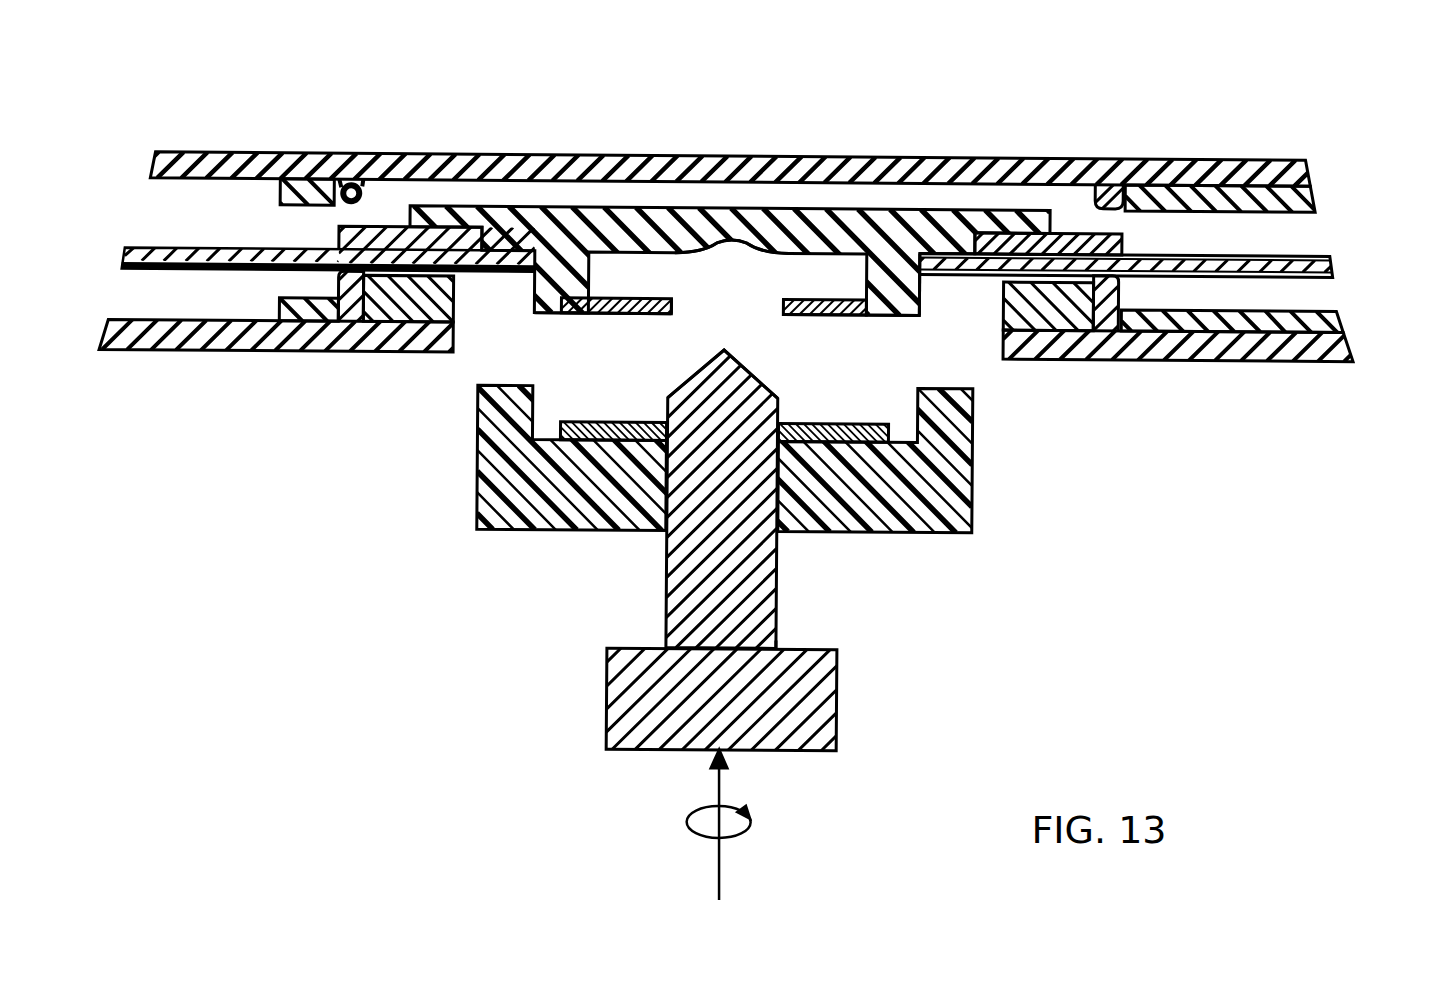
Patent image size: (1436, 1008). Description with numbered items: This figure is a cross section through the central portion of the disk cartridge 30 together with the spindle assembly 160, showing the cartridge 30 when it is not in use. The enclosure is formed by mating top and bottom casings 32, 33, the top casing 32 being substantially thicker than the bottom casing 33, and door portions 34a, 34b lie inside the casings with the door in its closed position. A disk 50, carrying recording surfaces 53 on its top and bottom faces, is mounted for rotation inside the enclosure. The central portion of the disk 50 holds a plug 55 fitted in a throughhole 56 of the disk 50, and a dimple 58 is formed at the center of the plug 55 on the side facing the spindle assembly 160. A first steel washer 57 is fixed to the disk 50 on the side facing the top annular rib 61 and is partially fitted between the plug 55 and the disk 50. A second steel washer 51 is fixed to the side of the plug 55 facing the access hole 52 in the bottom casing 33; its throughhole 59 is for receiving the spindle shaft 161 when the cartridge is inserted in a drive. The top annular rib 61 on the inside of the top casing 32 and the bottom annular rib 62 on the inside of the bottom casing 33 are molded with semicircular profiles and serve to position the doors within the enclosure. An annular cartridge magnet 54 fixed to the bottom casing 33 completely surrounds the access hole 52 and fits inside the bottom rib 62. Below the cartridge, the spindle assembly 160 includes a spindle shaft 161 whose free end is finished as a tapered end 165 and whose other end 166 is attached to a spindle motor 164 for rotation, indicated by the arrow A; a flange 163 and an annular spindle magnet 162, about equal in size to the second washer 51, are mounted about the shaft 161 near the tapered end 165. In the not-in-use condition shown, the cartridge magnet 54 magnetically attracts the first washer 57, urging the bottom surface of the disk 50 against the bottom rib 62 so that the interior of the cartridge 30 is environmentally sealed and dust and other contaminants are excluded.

The disk cartridge 30 is at (689, 130).
The top casing 32 is at (352, 170).
The bottom casing 33 is at (173, 356).
The upper liner 34a is at (306, 181).
The lower liner 34b is at (297, 352).
The disk 50 is at (120, 262).
The second steel washer 51 is at (594, 313).
The access hole 52 is at (457, 352).
The recording surfaces 53 is at (203, 251).
The annular cartridge magnet 54 is at (453, 310).
The plug 55 is at (532, 284).
The throughhole of the disk 56 is at (914, 283).
The first steel washer 57 is at (371, 229).
The dimple 58 is at (727, 245).
The throughhole of the second washer 59 is at (672, 303).
The top annular rib 61 is at (346, 204).
The bottom annular rib 62 is at (348, 350).
The spindle assembly 160 is at (573, 562).
The spindle shaft 161 is at (780, 578).
The annular spindle magnet 162 is at (632, 422).
The flange 163 is at (880, 533).
The spindle motor 164 is at (840, 697).
The tapered end 165 is at (728, 350).
The other end of the spindle shaft 166 is at (780, 645).
The rotation axis A is at (722, 783).